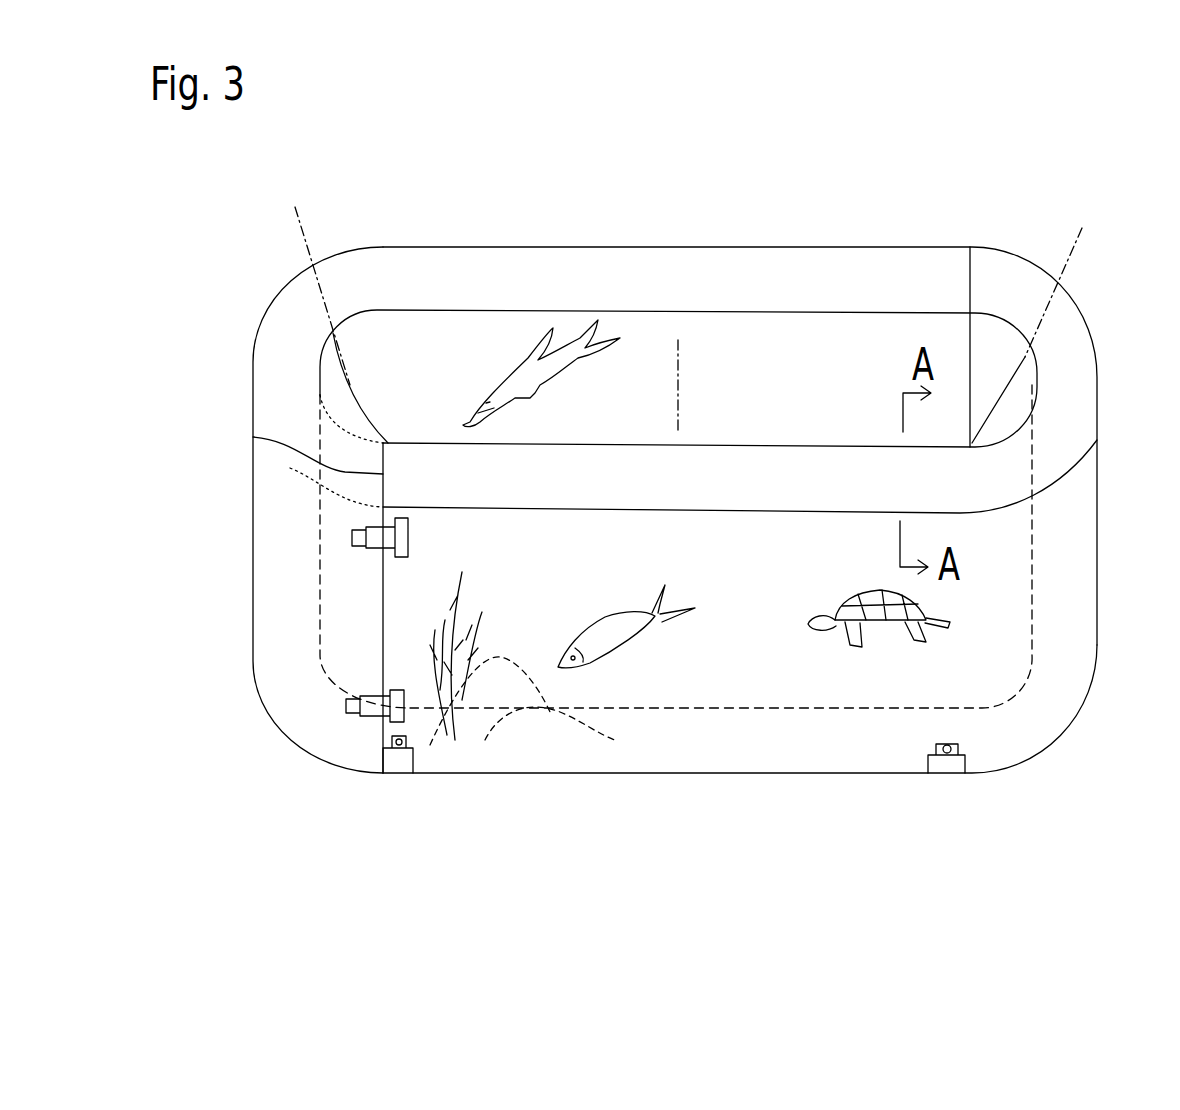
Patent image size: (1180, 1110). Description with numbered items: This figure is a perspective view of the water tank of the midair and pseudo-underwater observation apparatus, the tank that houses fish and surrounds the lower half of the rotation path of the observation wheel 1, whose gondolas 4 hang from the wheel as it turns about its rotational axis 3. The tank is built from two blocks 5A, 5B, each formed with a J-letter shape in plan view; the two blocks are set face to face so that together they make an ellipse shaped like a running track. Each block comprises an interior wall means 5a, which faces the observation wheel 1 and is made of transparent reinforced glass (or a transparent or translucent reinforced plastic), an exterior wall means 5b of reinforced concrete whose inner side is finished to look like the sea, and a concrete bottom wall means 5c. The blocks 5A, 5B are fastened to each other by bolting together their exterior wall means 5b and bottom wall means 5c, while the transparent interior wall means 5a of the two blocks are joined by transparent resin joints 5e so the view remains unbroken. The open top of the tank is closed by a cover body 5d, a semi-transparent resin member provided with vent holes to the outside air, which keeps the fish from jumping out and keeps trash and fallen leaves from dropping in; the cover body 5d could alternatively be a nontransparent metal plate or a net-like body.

The observation wheel 1 is at (314, 297).
The gondolas 4 is at (1048, 322).
The rotational axis 3 is at (680, 353).
The block 5A is at (612, 717).
The block 5B is at (495, 243).
The interior wall means 5a is at (452, 338).
The exterior wall means 5b is at (618, 245).
The bottom wall means 5c is at (1033, 730).
The cover body 5d is at (847, 277).
The transparent resin joints 5e is at (970, 248).